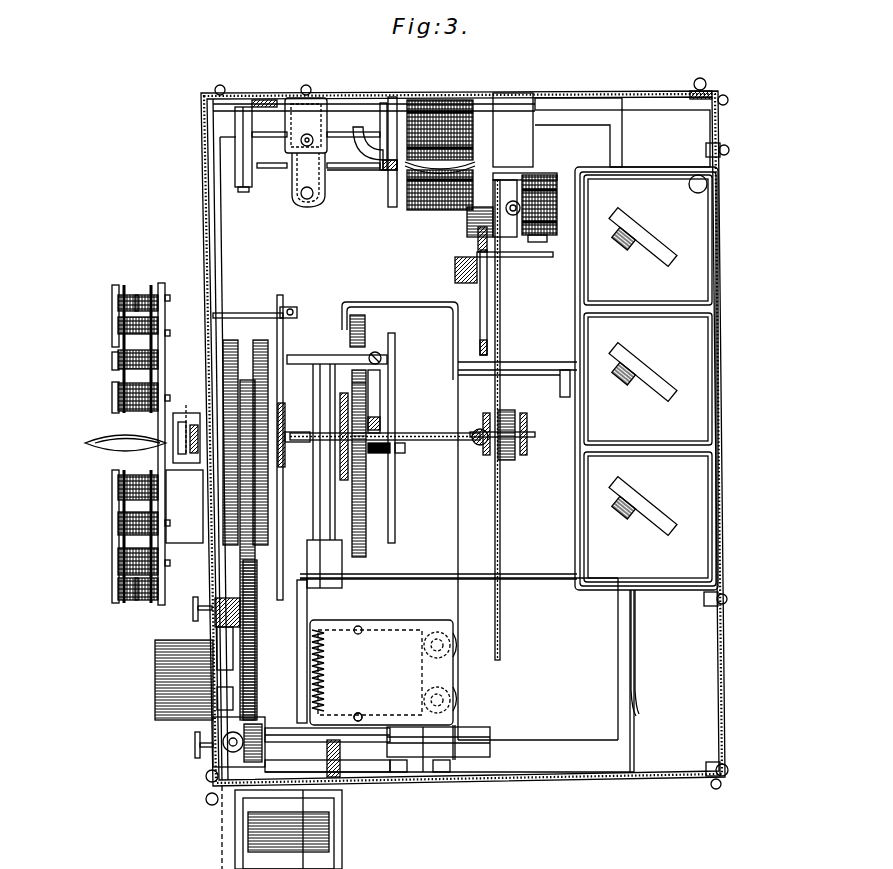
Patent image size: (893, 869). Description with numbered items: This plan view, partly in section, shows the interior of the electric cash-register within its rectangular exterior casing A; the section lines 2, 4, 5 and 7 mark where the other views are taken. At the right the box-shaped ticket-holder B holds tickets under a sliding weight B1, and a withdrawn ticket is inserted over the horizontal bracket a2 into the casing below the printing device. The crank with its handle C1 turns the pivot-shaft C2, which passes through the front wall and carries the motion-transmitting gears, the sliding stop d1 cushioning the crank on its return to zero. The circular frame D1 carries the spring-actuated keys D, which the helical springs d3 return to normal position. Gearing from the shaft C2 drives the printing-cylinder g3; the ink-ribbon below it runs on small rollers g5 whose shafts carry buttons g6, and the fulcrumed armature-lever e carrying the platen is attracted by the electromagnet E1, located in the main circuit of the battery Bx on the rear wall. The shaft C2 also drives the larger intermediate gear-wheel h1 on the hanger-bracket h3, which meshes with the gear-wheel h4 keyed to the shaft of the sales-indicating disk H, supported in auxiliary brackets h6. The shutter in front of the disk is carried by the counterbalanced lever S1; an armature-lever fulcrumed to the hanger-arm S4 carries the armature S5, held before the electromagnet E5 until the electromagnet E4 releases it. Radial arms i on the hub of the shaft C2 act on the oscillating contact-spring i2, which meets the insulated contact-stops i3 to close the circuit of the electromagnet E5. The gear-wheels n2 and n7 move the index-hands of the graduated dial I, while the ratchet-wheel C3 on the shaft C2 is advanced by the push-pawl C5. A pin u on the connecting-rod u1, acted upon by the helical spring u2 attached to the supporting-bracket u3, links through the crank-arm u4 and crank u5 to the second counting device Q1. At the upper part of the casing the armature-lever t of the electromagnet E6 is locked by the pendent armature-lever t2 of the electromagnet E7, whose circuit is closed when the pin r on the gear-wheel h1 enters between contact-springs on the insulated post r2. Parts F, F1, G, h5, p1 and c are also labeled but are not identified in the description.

The exterior casing A is at (512, 92).
The section line 2 2 is at (212, 92).
The section line 4 4 is at (815, 749).
The section line 5 5 is at (790, 430).
The section line 7 7 is at (296, 312).
The ticket-holder B is at (342, 836).
The sliding weight B1 is at (222, 836).
The electric battery Bx is at (626, 298).
The handle C1 is at (120, 440).
The pivot-shaft C2 is at (427, 435).
The ratchet-wheel C3 is at (287, 333).
The push-pawl C5 is at (286, 445).
The spring-actuated keys D is at (112, 304).
The circular frame D1 is at (165, 290).
The sliding stop d1 is at (188, 413).
The helical springs d3 is at (140, 292).
The electromagnet E1 is at (462, 690).
The electromagnet E4 is at (522, 203).
The electromagnet E5 is at (560, 178).
The electromagnet E6 is at (322, 205).
The electromagnet E7 is at (422, 118).
The armature-lever e is at (381, 690).
The plate F is at (553, 742).
The spring F1 is at (638, 665).
The pawl G is at (494, 152).
The printing-cylinder g3 is at (245, 640).
The rollers g5 is at (241, 604).
The buttons g6 is at (193, 606).
The sales-indicating disk H is at (501, 303).
The intermediate gear-wheel h1 is at (365, 318).
The hanger-bracket h3 is at (366, 472).
The gear-wheel h4 is at (366, 383).
The shaft h5 is at (530, 434).
The auxiliary brackets h6 is at (525, 414).
The graduated dial I is at (202, 525).
The radial arms i is at (395, 350).
The contact-spring i2 is at (447, 444).
The contact-stops i3 is at (514, 480).
The gear-wheel n2 is at (260, 340).
The gear-wheel n7 is at (230, 340).
The rod p1 is at (380, 398).
The second counting device Q1 is at (363, 760).
The pin r is at (403, 447).
The insulated post r2 is at (313, 362).
The shutter-lever S1 is at (488, 336).
The hanger-arm S4 is at (462, 260).
The armature S5 is at (520, 256).
The armature-lever t is at (337, 170).
The armature-lever t2 is at (383, 170).
The pin u is at (318, 368).
The connecting-rod u1 is at (313, 403).
The helical spring u2 is at (326, 665).
The supporting-bracket u3 is at (363, 717).
The crank-arm u4 is at (327, 750).
The crank u5 is at (327, 768).
The disc c is at (239, 742).
The horizontal bracket a2 is at (156, 684).